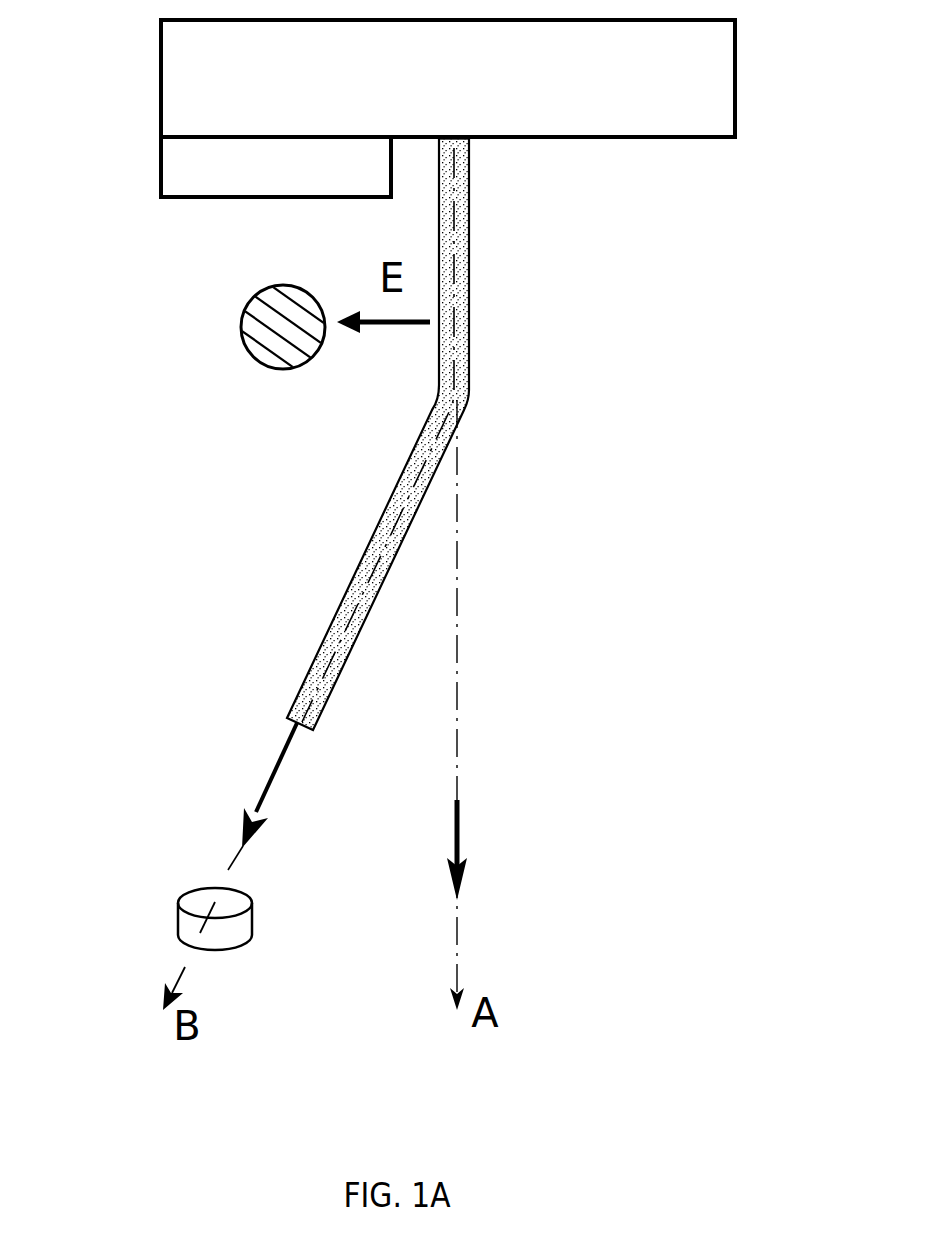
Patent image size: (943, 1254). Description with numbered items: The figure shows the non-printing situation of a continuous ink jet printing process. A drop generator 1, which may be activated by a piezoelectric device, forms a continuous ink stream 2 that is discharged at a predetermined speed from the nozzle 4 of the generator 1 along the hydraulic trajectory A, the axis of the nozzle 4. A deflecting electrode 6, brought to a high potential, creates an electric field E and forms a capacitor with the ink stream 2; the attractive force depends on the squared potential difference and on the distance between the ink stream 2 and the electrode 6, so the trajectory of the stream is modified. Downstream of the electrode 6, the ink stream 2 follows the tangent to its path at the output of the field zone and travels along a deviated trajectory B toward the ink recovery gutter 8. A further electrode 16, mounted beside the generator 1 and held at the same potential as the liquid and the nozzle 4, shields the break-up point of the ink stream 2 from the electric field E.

The drop generator 1 is at (710, 88).
The electrode 16 is at (188, 176).
The ink stream 2 is at (469, 332).
The nozzle 4 is at (470, 141).
The electrode 6 is at (270, 332).
The ink recovery gutter 8 is at (233, 933).